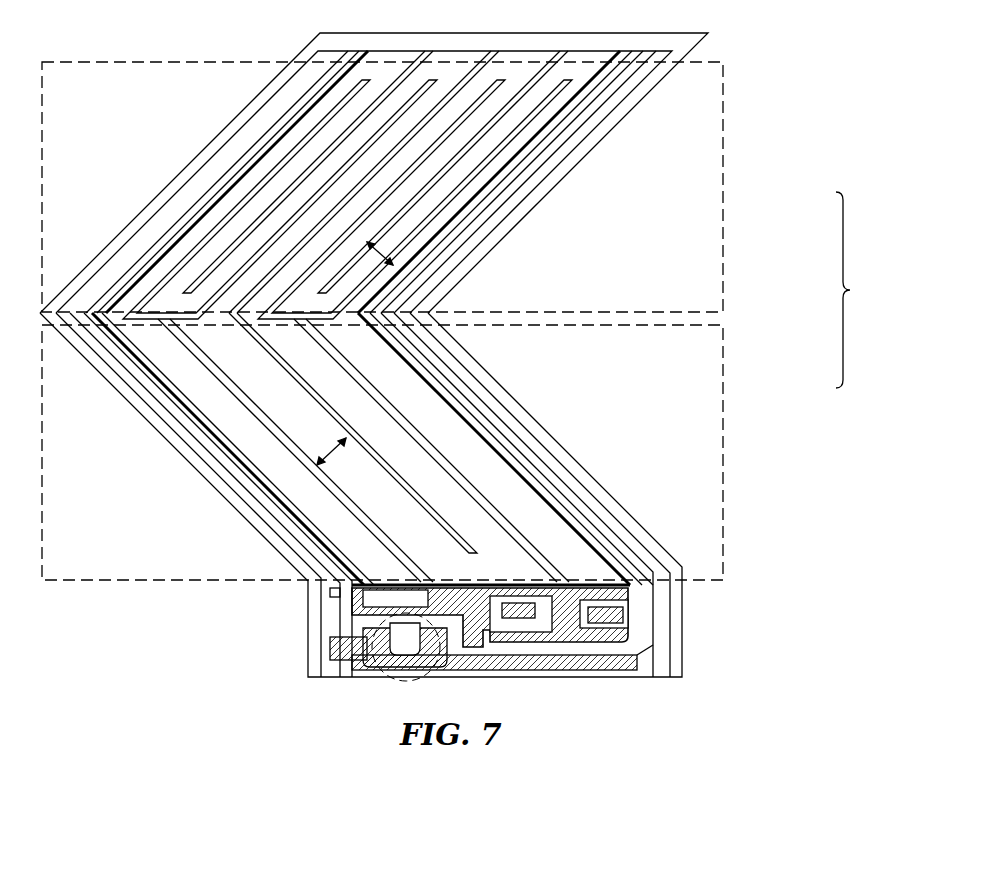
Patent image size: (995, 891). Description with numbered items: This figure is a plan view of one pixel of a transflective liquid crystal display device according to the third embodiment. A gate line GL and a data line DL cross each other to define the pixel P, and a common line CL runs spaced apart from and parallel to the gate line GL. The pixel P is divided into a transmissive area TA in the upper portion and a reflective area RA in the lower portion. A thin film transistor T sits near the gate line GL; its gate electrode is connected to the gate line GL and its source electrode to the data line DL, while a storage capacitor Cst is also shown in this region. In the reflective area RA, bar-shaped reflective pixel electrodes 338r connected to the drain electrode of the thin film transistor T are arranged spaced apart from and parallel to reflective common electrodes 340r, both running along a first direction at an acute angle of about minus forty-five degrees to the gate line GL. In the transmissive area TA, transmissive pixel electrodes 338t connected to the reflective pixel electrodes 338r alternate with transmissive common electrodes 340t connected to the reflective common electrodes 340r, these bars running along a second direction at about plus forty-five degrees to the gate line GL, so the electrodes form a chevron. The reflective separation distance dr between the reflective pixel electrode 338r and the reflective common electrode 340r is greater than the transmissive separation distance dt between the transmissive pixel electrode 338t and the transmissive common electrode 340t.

The transmissive common electrode 340t is at (467, 152).
The transmissive pixel electrode 338t is at (452, 193).
The reflective common electrode 340r is at (370, 450).
The reflective pixel electrode 338r is at (500, 508).
The transmissive separation distance dt is at (382, 250).
The reflective separation distance dr is at (329, 449).
The transmissive area TA is at (723, 187).
The reflective area RA is at (723, 388).
The pixel P is at (852, 290).
The data line DL is at (240, 493).
The gate line GL is at (323, 657).
The common line CL is at (330, 595).
The thin film transistor T is at (353, 635).
The storage capacitor Cst is at (552, 612).